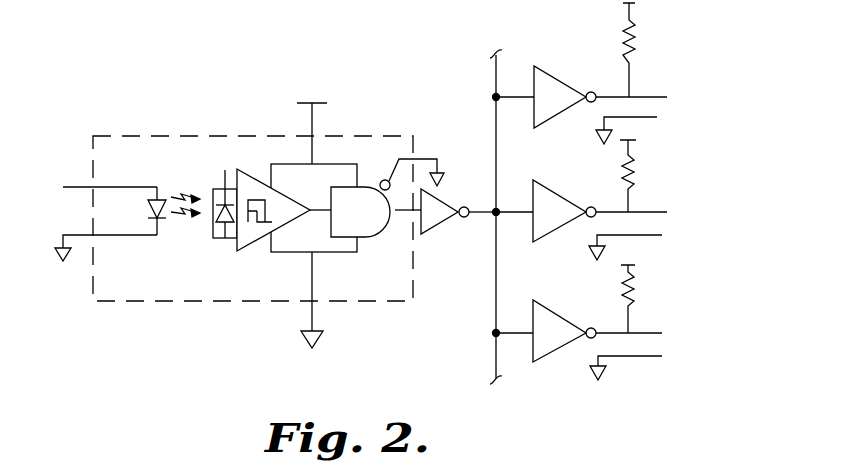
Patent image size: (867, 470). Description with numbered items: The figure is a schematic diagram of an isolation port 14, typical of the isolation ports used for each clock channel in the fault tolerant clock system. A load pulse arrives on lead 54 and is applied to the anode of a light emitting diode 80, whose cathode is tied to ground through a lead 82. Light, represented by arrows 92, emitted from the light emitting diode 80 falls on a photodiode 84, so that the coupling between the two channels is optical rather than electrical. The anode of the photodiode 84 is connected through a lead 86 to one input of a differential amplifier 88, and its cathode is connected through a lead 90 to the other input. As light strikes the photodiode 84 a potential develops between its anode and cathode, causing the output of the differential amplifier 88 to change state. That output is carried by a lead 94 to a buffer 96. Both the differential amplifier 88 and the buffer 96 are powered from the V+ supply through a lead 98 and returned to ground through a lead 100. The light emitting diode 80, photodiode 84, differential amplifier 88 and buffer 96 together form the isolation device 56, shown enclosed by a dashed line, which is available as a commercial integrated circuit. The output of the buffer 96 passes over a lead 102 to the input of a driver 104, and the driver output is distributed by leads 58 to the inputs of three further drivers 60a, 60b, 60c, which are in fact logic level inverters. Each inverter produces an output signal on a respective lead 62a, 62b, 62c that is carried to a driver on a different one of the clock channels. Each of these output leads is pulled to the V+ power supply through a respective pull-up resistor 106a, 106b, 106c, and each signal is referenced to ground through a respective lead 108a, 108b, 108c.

The isolation port 14 is at (197, 330).
The lead 54 is at (78, 186).
The isolation device 56 is at (130, 299).
The leads 58 is at (496, 299).
The driver 60a is at (560, 76).
The driver 60b is at (555, 190).
The driver 60c is at (555, 308).
The lead 62a is at (648, 96).
The lead 62b is at (645, 210).
The lead 62c is at (650, 332).
The light emitting diode 80 is at (148, 206).
The lead 82 is at (110, 237).
The photodiode 84 is at (212, 223).
The lead 86 is at (219, 240).
The differential amplifier 88 is at (250, 246).
The lead 90 is at (223, 188).
The arrows 92 is at (181, 195).
The lead 94 is at (316, 210).
The buffer 96 is at (381, 181).
The lead 98 is at (313, 131).
The lead 100 is at (313, 287).
The lead 102 is at (398, 225).
The driver 104 is at (445, 195).
The pull-up resistor 106a is at (637, 28).
The pull-up resistor 106b is at (632, 163).
The pull-up resistor 106c is at (632, 282).
The lead 108a is at (657, 117).
The lead 108b is at (662, 236).
The lead 108c is at (662, 357).